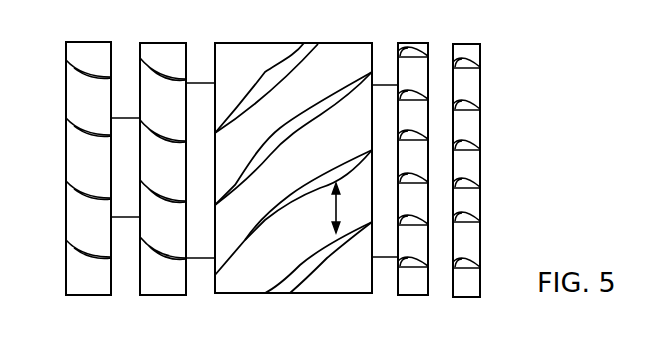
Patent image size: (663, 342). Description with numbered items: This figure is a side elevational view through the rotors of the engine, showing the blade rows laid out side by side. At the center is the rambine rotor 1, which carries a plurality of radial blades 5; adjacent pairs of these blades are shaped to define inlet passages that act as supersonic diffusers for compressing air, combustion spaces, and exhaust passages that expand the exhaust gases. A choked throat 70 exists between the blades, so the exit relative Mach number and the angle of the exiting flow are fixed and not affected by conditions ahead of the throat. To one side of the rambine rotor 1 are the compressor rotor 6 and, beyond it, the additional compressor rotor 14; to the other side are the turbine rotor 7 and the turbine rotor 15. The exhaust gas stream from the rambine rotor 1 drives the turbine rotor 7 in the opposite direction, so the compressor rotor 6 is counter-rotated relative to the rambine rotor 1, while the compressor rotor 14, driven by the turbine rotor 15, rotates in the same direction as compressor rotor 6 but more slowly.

The rambine rotor 1 is at (292, 48).
The radial blades 5 is at (268, 80).
The compressor rotor 6 is at (168, 278).
The turbine rotor 7 is at (411, 287).
The compressor rotor 14 is at (82, 277).
The turbine rotor 15 is at (470, 240).
The choked throat 70 is at (340, 207).